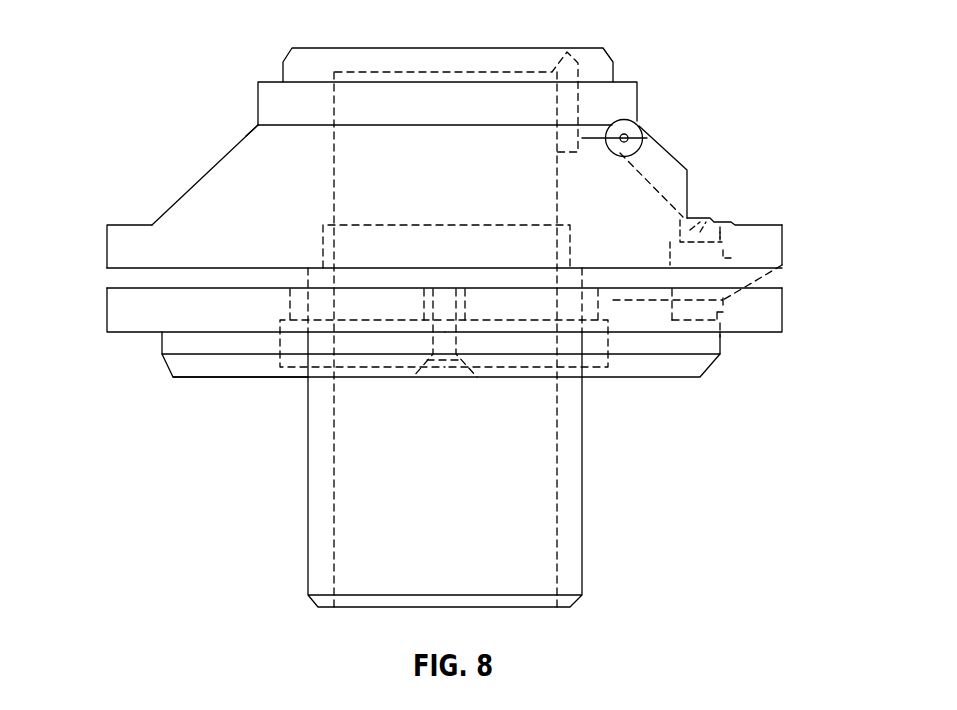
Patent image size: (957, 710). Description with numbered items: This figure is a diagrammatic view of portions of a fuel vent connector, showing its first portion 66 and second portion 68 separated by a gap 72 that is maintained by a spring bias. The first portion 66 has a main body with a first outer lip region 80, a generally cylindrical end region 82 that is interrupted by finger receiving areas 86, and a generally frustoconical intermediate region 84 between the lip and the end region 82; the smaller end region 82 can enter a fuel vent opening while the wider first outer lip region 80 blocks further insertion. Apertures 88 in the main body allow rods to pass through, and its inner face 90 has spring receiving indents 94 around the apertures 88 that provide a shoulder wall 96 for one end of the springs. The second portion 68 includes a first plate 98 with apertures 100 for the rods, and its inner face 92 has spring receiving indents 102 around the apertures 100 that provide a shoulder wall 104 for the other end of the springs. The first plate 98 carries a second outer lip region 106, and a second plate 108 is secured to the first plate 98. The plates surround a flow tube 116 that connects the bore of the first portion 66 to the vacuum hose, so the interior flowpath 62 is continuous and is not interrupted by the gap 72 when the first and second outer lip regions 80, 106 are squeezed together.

The flowpath 62 is at (353, 508).
The first portion 66 is at (200, 177).
The second portion 68 is at (158, 345).
The gap 72 is at (122, 282).
The first outer lip region 80 is at (128, 238).
The end region 82 is at (291, 57).
The intermediate region 84 is at (256, 143).
The finger receiving areas 86 is at (623, 102).
The apertures 88 is at (700, 238).
The inner face 90 is at (782, 262).
The inner face 92 is at (782, 290).
The spring receiving indents 94 is at (745, 257).
The shoulder wall 96 is at (713, 235).
The first plate 98 is at (765, 312).
The apertures 100 is at (730, 312).
The spring receiving indents 102 is at (762, 266).
The shoulder wall 104 is at (673, 302).
The second outer lip region 106 is at (123, 325).
The second plate 108 is at (203, 363).
The flow tube 116 is at (575, 505).